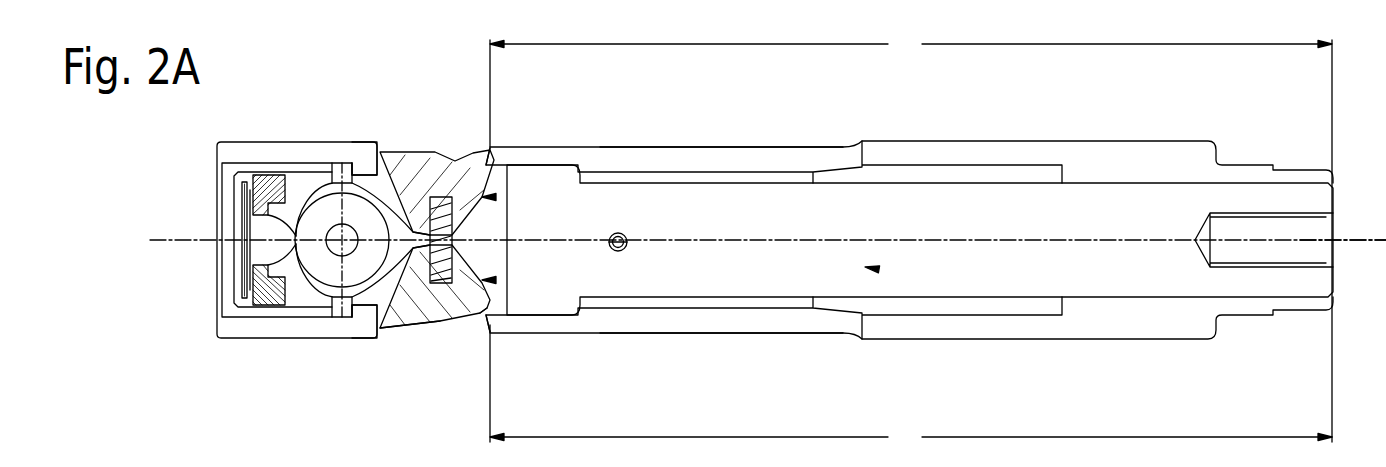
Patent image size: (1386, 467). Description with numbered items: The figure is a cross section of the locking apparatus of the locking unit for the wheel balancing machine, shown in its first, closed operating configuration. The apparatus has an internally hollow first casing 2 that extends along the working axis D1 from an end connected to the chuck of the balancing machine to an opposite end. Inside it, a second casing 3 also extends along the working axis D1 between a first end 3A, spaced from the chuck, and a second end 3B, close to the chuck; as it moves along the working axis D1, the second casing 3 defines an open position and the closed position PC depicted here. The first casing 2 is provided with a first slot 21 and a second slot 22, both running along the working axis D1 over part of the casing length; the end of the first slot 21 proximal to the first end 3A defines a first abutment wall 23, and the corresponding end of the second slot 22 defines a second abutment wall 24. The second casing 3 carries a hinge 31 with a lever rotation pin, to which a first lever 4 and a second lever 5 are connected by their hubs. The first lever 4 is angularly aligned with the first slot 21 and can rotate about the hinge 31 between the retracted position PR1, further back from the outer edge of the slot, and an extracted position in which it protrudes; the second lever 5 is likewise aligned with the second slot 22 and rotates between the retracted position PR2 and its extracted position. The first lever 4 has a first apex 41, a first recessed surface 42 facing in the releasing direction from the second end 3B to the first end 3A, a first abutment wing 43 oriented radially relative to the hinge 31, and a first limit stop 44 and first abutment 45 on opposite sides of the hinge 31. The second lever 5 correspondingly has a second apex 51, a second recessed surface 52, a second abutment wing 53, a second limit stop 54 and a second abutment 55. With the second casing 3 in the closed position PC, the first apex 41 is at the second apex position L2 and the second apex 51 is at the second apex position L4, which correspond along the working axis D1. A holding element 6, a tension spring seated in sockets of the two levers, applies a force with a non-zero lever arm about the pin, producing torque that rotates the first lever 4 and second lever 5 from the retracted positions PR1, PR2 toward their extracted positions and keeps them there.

The first casing 2 is at (1020, 141).
The first slot 21 is at (680, 147).
The second slot 22 is at (738, 333).
The first abutment wall 23 is at (377, 145).
The second abutment wall 24 is at (360, 338).
The second casing 3 is at (762, 210).
The first end 3A is at (252, 288).
The second end 3B is at (1272, 285).
The hinge 31 is at (333, 232).
The first lever 4 is at (403, 167).
The first apex 41 is at (495, 148).
The first recessed surface 42 is at (349, 176).
The first abutment wing 43 is at (253, 252).
The first limit stop 44 is at (345, 182).
The first abutment 45 is at (336, 305).
The second lever 5 is at (470, 296).
The second apex 51 is at (478, 305).
The second recessed surface 52 is at (400, 322).
The second abutment wing 53 is at (280, 240).
The second limit stop 54 is at (346, 314).
The second abutment 55 is at (332, 192).
The holding element 6 is at (434, 198).
The retracted position PR1 is at (496, 197).
The retracted position PR2 is at (496, 280).
The closed position PC is at (883, 270).
The second apex position L2 is at (911, 236).
The second apex position L4 is at (911, 388).
The working axis D1 is at (1357, 240).